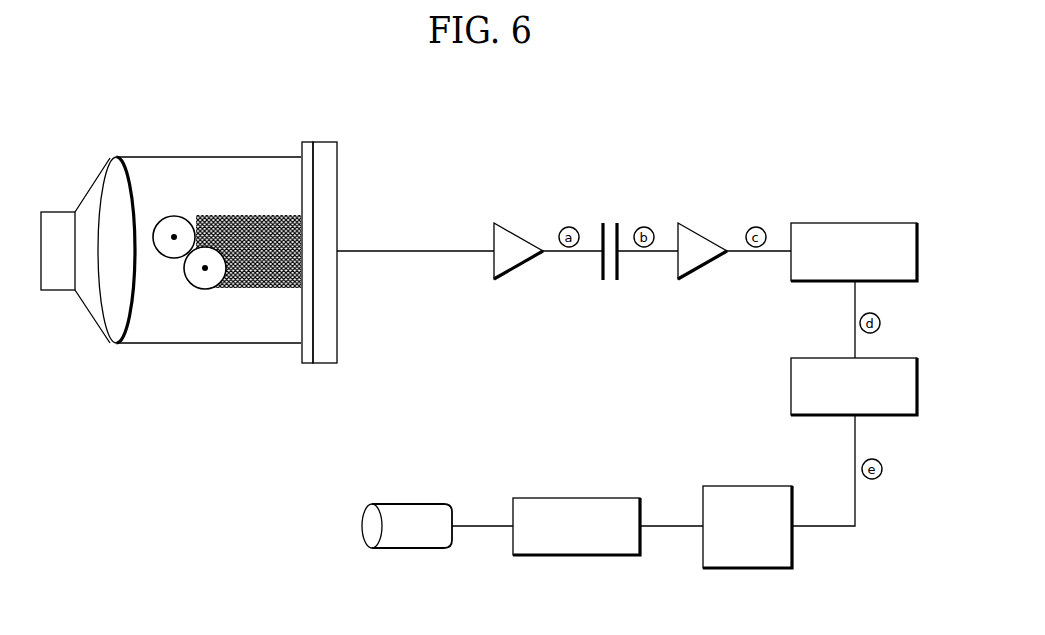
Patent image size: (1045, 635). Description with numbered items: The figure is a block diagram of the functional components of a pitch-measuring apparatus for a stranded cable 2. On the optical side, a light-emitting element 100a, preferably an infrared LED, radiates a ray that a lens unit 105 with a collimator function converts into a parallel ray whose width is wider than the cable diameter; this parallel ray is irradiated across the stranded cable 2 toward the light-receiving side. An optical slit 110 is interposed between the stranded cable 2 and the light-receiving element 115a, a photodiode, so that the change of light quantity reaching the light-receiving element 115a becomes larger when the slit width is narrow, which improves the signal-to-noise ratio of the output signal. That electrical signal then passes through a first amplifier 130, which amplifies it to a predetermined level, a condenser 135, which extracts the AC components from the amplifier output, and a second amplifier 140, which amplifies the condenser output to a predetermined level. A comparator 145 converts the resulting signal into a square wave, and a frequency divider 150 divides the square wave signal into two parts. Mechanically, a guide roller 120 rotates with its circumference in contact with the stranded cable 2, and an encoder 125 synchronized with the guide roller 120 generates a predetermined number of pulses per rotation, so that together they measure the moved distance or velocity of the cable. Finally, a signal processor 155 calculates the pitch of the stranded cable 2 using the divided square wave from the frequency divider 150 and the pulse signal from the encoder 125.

The light-emitting element 100a is at (60, 212).
The lens unit 105 is at (117, 158).
The stranded cable 2 is at (180, 286).
The optical slit 110 is at (306, 142).
The light-receiving element 115a is at (326, 142).
The guide roller 120 is at (412, 504).
The encoder 125 is at (577, 498).
The first amplifier 130 is at (517, 235).
The condenser 135 is at (618, 225).
The second amplifier 140 is at (703, 238).
The comparator 145 is at (853, 223).
The frequency divider 150 is at (896, 358).
The signal processor 155 is at (747, 486).